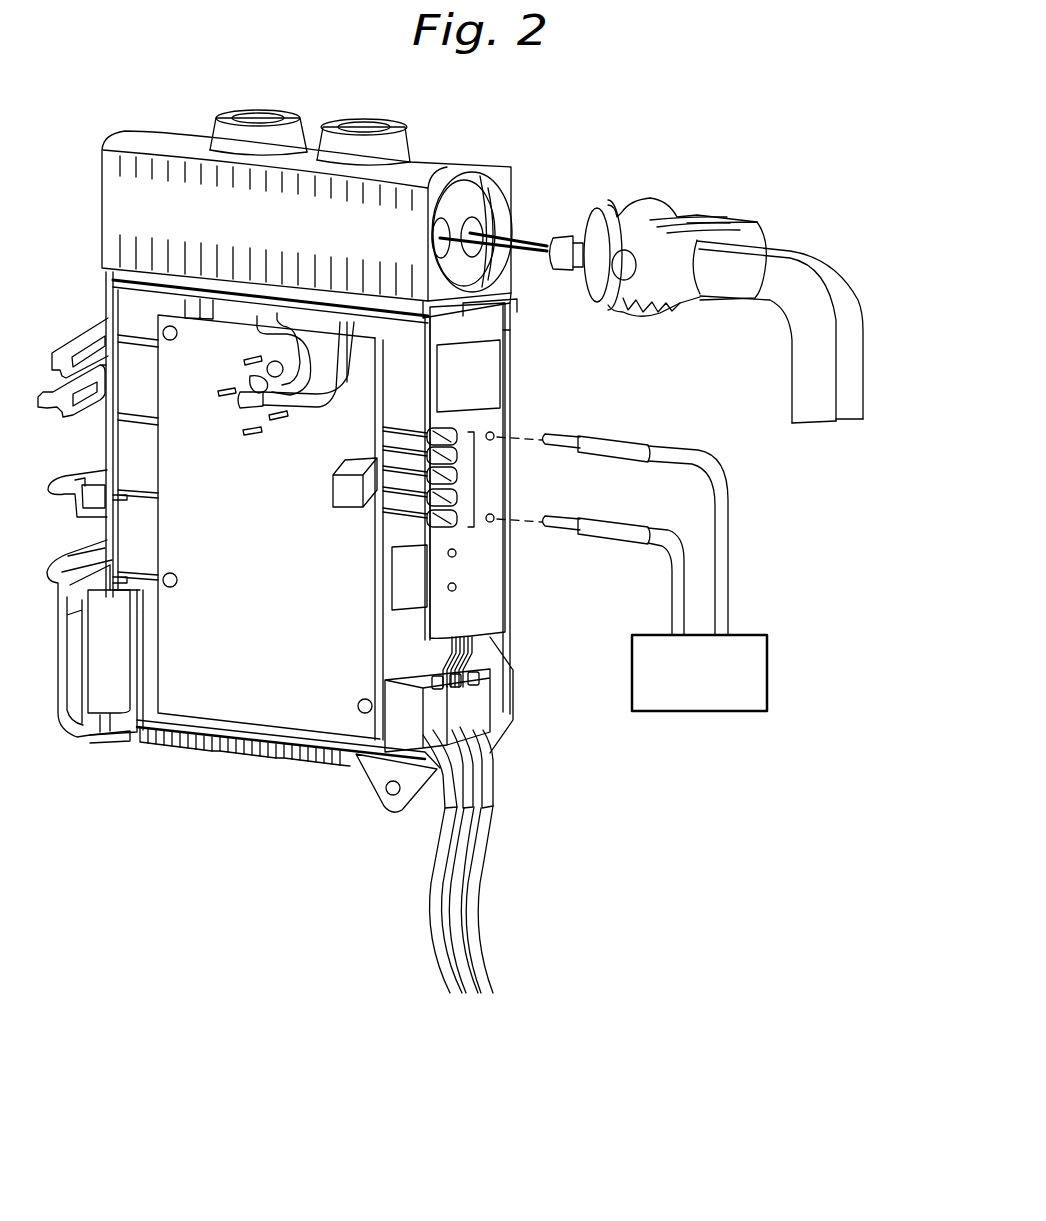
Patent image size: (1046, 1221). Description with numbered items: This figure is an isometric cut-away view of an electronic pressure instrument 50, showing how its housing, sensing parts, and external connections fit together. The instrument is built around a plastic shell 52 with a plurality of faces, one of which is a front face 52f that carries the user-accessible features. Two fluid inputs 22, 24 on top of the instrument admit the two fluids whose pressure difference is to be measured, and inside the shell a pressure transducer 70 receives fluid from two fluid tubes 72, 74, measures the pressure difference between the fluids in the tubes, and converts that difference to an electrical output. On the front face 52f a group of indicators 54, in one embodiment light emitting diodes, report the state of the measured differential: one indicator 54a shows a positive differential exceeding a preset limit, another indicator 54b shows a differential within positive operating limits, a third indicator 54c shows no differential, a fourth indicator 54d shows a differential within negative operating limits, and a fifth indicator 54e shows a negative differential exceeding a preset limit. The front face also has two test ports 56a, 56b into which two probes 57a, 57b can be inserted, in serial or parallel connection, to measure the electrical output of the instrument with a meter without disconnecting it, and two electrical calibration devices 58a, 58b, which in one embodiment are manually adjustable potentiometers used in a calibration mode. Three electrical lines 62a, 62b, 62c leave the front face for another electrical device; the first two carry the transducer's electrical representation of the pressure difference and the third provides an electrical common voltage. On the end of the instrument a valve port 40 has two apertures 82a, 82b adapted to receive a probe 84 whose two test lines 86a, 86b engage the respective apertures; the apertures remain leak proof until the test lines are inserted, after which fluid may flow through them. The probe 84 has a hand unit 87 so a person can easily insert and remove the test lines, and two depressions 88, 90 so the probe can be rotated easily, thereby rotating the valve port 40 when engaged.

The electronic pressure instrument 50 is at (112, 95).
The fluid input 22 is at (298, 124).
The fluid input 24 is at (407, 140).
The valve port 40 is at (472, 200).
The aperture 82a is at (436, 238).
The aperture 82b is at (483, 232).
The probe 84 is at (656, 198).
The test line 86a is at (557, 268).
The test line 86b is at (866, 394).
The hand unit 87 is at (752, 232).
The depression 88 is at (714, 215).
The depression 90 is at (676, 316).
The plastic shell 52 is at (212, 759).
The front face 52f is at (500, 412).
The indicators 54 is at (478, 480).
The LED 54a is at (441, 432).
The LED 54b is at (426, 437).
The LED 54c is at (428, 474).
The LED 54d is at (428, 497).
The LED 54e is at (428, 520).
The test port 56a is at (497, 434).
The test port 56b is at (497, 521).
The probe 57a is at (582, 433).
The probe 57b is at (582, 516).
The electrical calibration device 58a is at (458, 553).
The electrical calibration device 58b is at (460, 587).
The electrical line 62a is at (440, 680).
The electrical line 62b is at (470, 666).
The electrical line 62c is at (500, 681).
The pressure transducer 70 is at (250, 383).
The fluid tube 72 is at (278, 348).
The fluid tube 74 is at (300, 405).